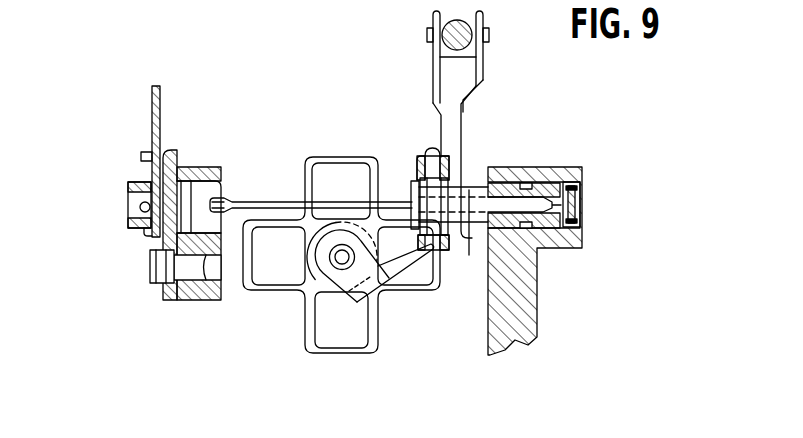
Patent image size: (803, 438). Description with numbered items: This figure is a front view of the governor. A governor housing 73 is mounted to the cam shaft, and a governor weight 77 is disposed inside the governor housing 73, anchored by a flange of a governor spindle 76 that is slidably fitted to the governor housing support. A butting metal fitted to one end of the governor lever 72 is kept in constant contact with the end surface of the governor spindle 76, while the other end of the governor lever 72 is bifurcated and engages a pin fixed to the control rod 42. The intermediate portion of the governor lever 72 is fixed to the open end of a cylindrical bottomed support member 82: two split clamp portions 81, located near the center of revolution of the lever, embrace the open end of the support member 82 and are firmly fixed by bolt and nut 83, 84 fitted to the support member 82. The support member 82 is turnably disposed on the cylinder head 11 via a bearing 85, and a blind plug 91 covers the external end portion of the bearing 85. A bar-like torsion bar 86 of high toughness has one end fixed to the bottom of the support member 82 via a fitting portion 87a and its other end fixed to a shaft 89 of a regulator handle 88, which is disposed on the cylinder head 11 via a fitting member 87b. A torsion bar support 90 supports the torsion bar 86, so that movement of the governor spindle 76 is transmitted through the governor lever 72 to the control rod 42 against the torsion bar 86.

The cylinder head 11 is at (531, 300).
The control rod 42 is at (470, 47).
The governor lever 72 is at (441, 113).
The governor housing 73 is at (310, 338).
The governor spindle 76 is at (322, 277).
The governor weight 77 is at (340, 336).
The split clamp portions 81 is at (414, 190).
The support member 82 is at (467, 242).
The bolt 83 is at (432, 254).
The nut 84 is at (424, 184).
The bearing 85 is at (538, 183).
The torsion bar 86 is at (253, 201).
The fitting portion 87a is at (566, 205).
The fitting member 87b is at (214, 197).
The regulator handle 88 is at (160, 111).
The shaft 89 is at (128, 205).
The torsion bar support 90 is at (165, 242).
The blind plug 91 is at (580, 184).